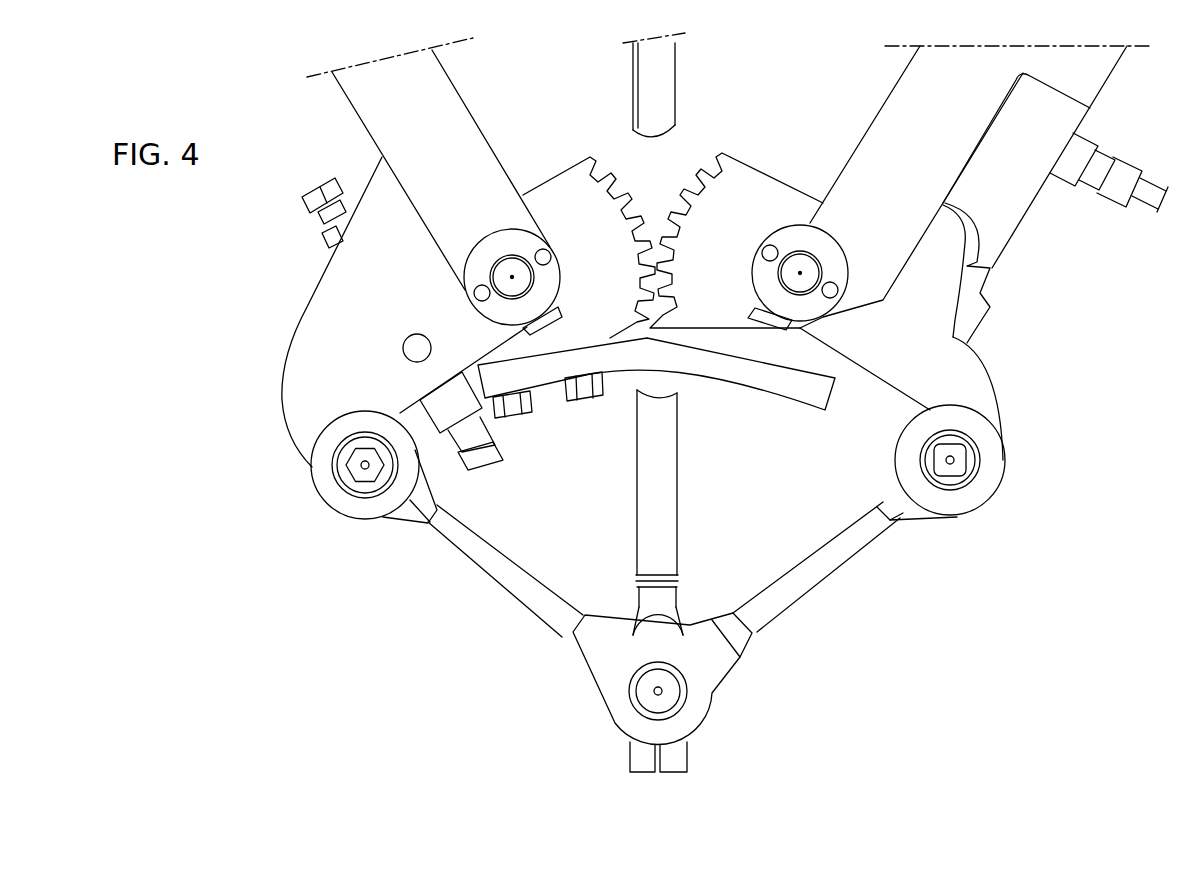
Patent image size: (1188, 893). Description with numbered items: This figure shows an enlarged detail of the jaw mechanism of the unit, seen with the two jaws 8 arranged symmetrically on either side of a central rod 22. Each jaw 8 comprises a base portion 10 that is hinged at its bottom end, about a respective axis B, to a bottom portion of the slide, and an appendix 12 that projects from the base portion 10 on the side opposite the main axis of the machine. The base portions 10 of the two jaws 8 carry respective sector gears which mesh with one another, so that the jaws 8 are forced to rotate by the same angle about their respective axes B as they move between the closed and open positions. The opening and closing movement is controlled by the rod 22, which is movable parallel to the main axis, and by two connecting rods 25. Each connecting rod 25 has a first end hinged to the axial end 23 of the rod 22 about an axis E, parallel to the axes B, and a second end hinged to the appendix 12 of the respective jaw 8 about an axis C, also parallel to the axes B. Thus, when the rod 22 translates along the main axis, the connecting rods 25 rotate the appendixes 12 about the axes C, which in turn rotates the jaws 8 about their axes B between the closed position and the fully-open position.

The jaw 8 is at (304, 136).
The base portion 10 is at (475, 132).
The appendix 12 is at (283, 407).
The rod 22 is at (663, 102).
The axial end 23 is at (680, 760).
The connecting rod 25 is at (480, 558).
The axis B is at (512, 277).
The axis C is at (365, 465).
The axis E is at (658, 691).